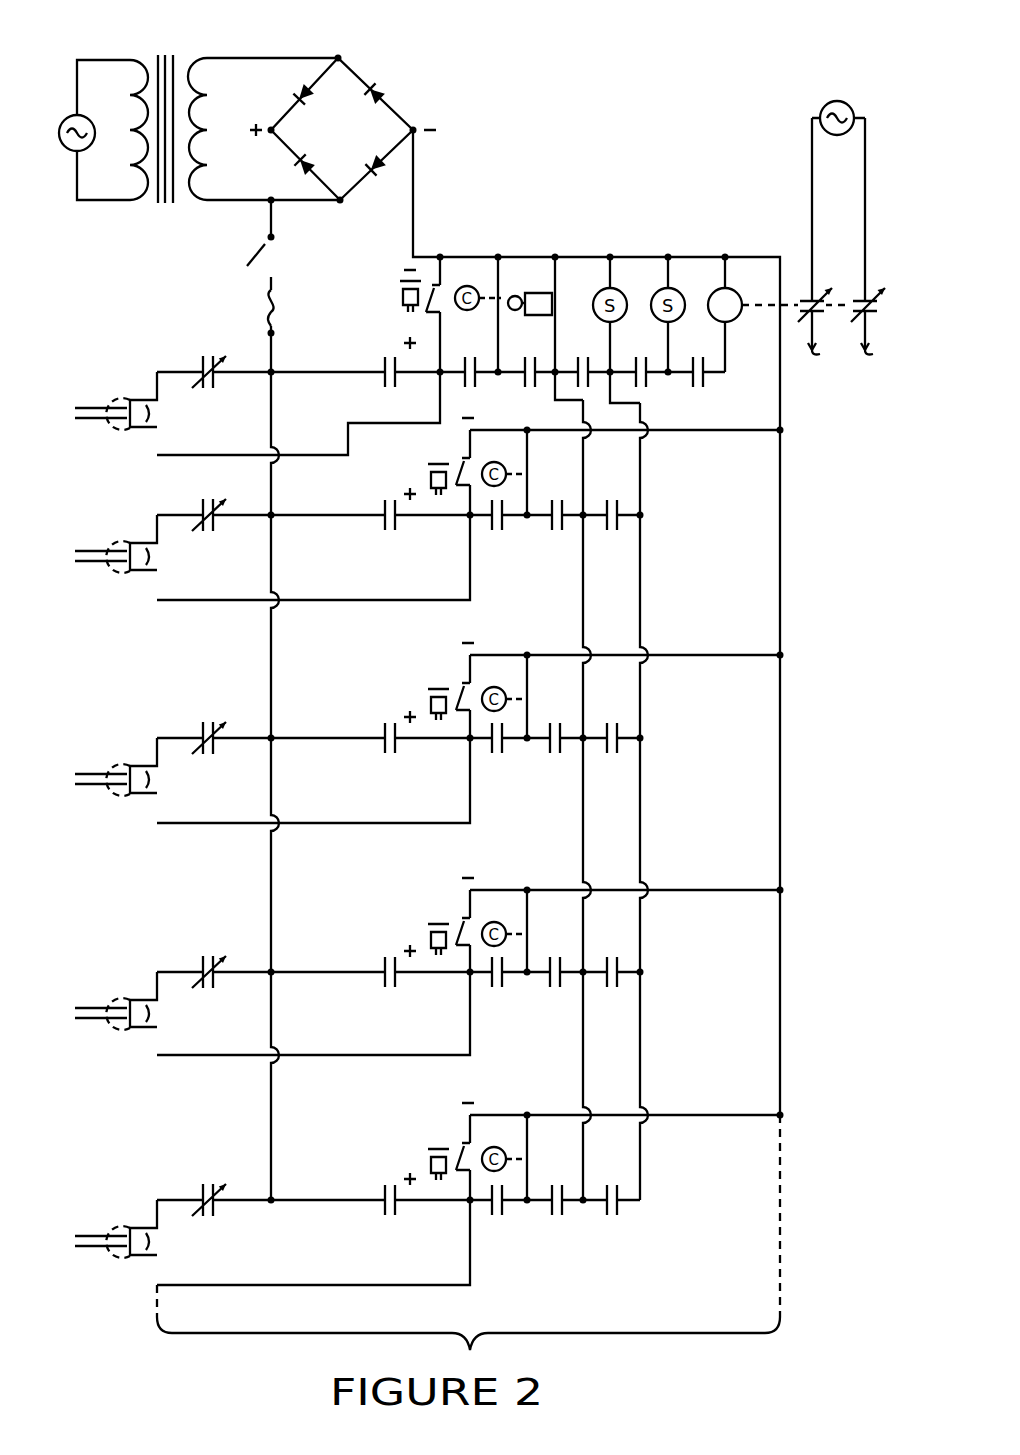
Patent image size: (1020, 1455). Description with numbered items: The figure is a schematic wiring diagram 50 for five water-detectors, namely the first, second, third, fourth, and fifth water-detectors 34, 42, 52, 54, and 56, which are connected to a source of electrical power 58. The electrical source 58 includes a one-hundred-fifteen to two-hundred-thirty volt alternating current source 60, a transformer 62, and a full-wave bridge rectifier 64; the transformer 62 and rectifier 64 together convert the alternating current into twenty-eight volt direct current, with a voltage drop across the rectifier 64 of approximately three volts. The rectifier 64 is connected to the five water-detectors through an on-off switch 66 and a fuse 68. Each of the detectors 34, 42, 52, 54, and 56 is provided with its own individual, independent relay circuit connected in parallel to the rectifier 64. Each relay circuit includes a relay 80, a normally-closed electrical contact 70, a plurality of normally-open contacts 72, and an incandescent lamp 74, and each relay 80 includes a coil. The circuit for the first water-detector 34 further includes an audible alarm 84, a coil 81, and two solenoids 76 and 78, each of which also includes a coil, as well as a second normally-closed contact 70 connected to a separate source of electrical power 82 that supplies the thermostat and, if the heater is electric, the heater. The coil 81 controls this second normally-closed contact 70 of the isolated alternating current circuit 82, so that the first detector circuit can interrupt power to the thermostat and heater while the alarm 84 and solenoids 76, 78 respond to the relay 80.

The first water-detector 34 is at (133, 385).
The second water-detector 42 is at (126, 540).
The wiring diagram 50 is at (551, 85).
The third water-detector 52 is at (128, 758).
The fourth water-detector 54 is at (130, 990).
The fifth water-detector 56 is at (130, 1215).
The source of electrical power 58 is at (233, 50).
The alternating current source 60 is at (70, 150).
The transformer 62 is at (164, 54).
The full-wave bridge rectifier 64 is at (392, 108).
The on-off switch 66 is at (258, 253).
The fuse 68 is at (278, 309).
The normally-closed electrical contact 70 is at (210, 352).
The normally-open contacts 72 is at (388, 356).
The incandescent lamp 74 is at (467, 286).
The solenoid 76 is at (611, 288).
The solenoid 78 is at (670, 288).
The relay 80 is at (402, 290).
The coil 81 is at (731, 291).
The source of electrical power for the thermostat 82 is at (808, 105).
The audible alarm 84 is at (540, 292).